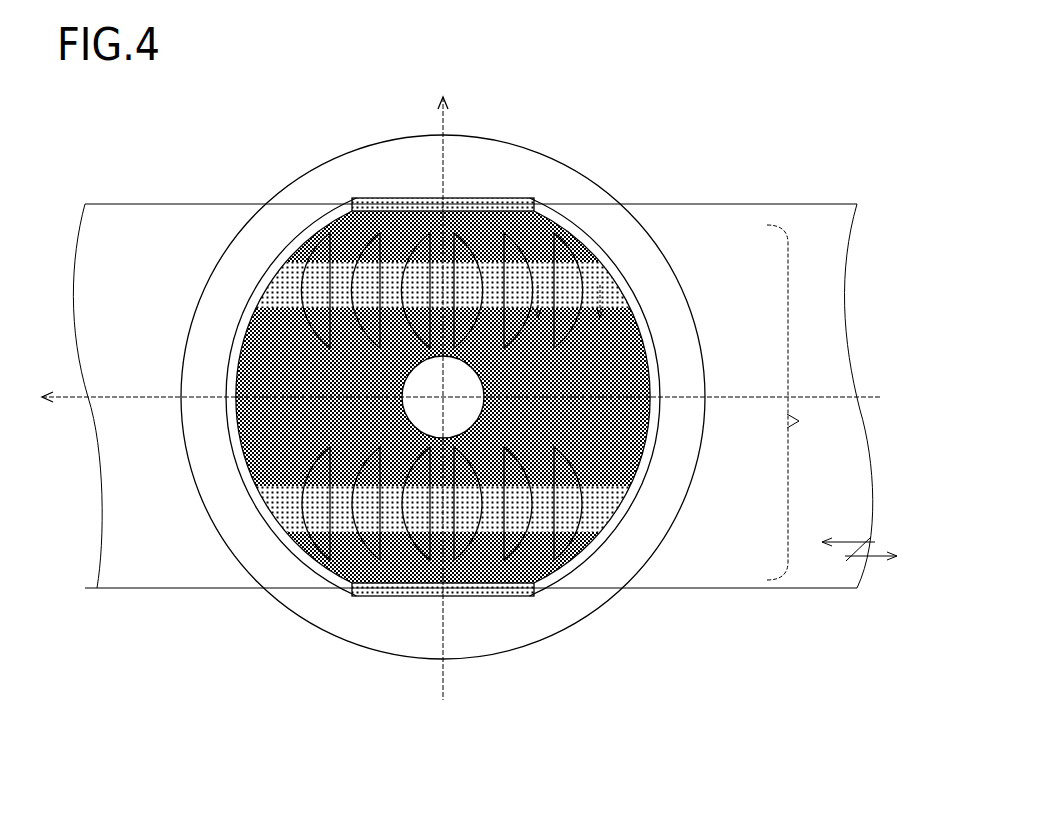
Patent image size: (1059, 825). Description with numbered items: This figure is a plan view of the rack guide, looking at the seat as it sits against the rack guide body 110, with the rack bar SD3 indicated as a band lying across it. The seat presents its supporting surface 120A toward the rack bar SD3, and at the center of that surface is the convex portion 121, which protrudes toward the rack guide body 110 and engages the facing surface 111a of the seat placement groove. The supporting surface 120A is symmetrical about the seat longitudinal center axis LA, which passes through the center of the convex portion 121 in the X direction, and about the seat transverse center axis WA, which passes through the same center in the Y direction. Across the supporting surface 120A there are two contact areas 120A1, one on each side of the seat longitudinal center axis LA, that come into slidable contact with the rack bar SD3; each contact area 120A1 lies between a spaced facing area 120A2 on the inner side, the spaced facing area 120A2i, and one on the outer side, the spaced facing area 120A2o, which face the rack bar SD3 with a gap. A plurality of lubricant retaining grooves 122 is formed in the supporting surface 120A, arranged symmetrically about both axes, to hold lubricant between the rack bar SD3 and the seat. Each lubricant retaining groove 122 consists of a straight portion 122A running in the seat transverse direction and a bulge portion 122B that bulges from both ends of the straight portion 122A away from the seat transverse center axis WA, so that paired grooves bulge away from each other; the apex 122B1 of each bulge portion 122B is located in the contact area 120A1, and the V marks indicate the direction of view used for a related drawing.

The rack guide body 110 is at (484, 659).
The facing surface 111a is at (622, 562).
The supporting surface 120A is at (832, 402).
The contact area 120A1 is at (612, 290).
The spaced facing area 120A2 is at (735, 418).
The spaced facing area on the outer side 120A2o is at (600, 236).
The spaced facing area on the inner side 120A2i is at (626, 352).
The convex portion 121 is at (404, 403).
The lubricant retaining groove 122 is at (305, 232).
The straight portion 122A is at (471, 236).
The bulge portion 122B is at (531, 204).
The apex 122B1 is at (481, 292).
The rack bar SD3 is at (148, 214).
The seat longitudinal center axis LA is at (136, 394).
The seat transverse center axis WA is at (438, 117).
The X direction X is at (453, 398).
The Y direction Y is at (442, 385).
The V direction V is at (569, 310).